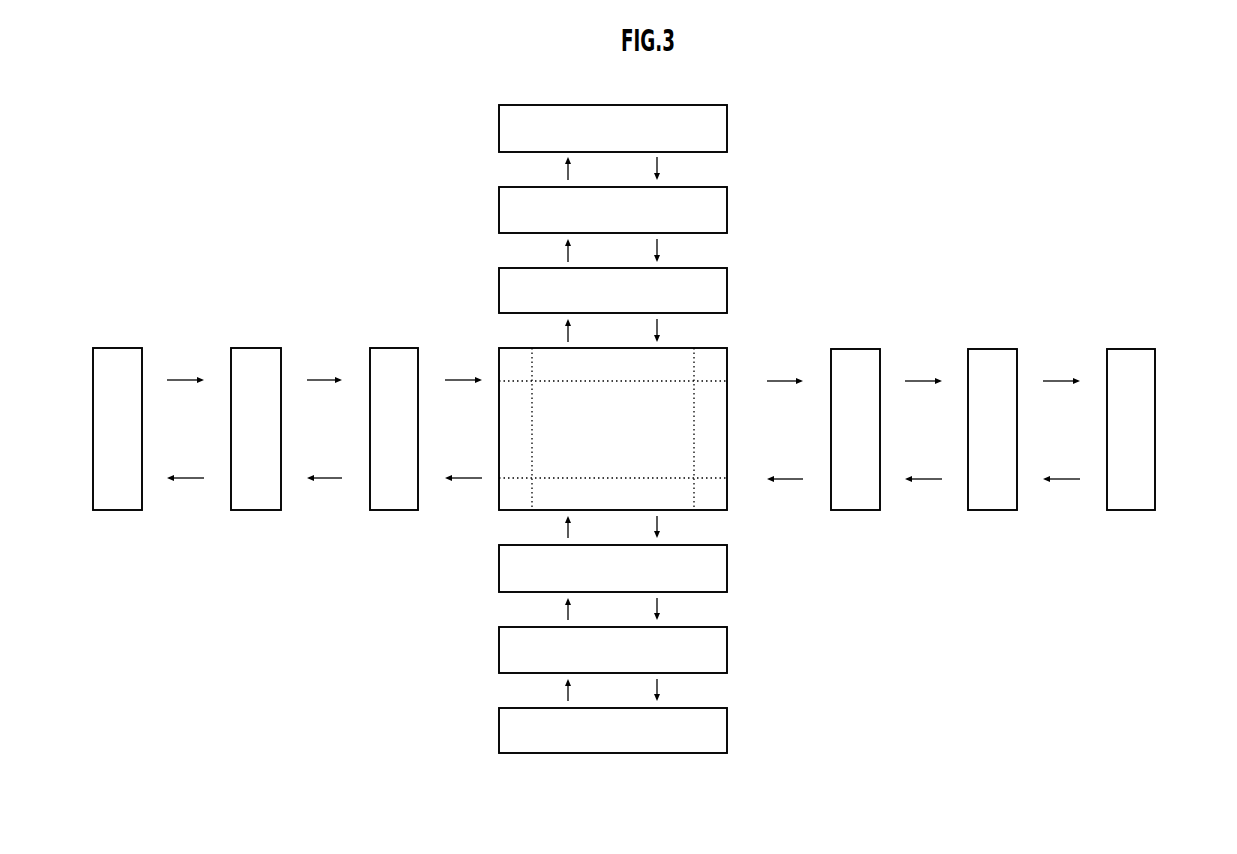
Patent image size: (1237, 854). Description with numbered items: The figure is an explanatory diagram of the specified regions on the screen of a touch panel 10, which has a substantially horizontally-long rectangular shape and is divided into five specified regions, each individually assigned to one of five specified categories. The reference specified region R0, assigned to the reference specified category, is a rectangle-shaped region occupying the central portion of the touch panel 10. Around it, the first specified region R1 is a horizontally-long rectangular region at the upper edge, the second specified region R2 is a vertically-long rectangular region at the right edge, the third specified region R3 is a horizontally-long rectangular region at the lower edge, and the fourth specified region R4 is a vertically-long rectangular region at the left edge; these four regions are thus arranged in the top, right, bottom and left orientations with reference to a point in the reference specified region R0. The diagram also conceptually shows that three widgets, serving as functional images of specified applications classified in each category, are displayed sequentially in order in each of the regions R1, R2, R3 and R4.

The processing apparatus / central region 10 is at (722, 337).
The reference specified region R0 is at (602, 438).
The first specified region R1 is at (602, 372).
The second specified region R2 is at (700, 438).
The third specified region R3 is at (602, 506).
The fourth specified region R4 is at (506, 438).